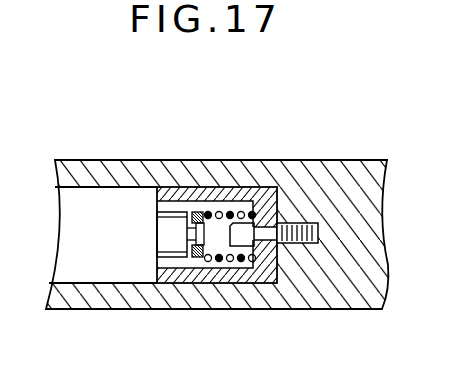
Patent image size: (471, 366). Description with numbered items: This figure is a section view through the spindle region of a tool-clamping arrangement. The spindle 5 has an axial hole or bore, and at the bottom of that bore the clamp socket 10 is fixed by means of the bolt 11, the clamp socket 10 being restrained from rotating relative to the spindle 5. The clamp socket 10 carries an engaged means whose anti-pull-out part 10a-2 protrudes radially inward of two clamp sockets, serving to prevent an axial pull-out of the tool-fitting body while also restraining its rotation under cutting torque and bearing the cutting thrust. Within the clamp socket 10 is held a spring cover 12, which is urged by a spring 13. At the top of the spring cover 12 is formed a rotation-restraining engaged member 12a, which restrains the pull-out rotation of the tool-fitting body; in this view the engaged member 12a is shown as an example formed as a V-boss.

The spindle 5 is at (86, 160).
The clamp socket 10 is at (205, 278).
The anti-pull-out part 10a-2 is at (165, 230).
The bolt 11 is at (301, 222).
The spring cover 12 is at (207, 222).
The rotation-restraining engaged member 12a is at (187, 233).
The spring 13 is at (247, 262).